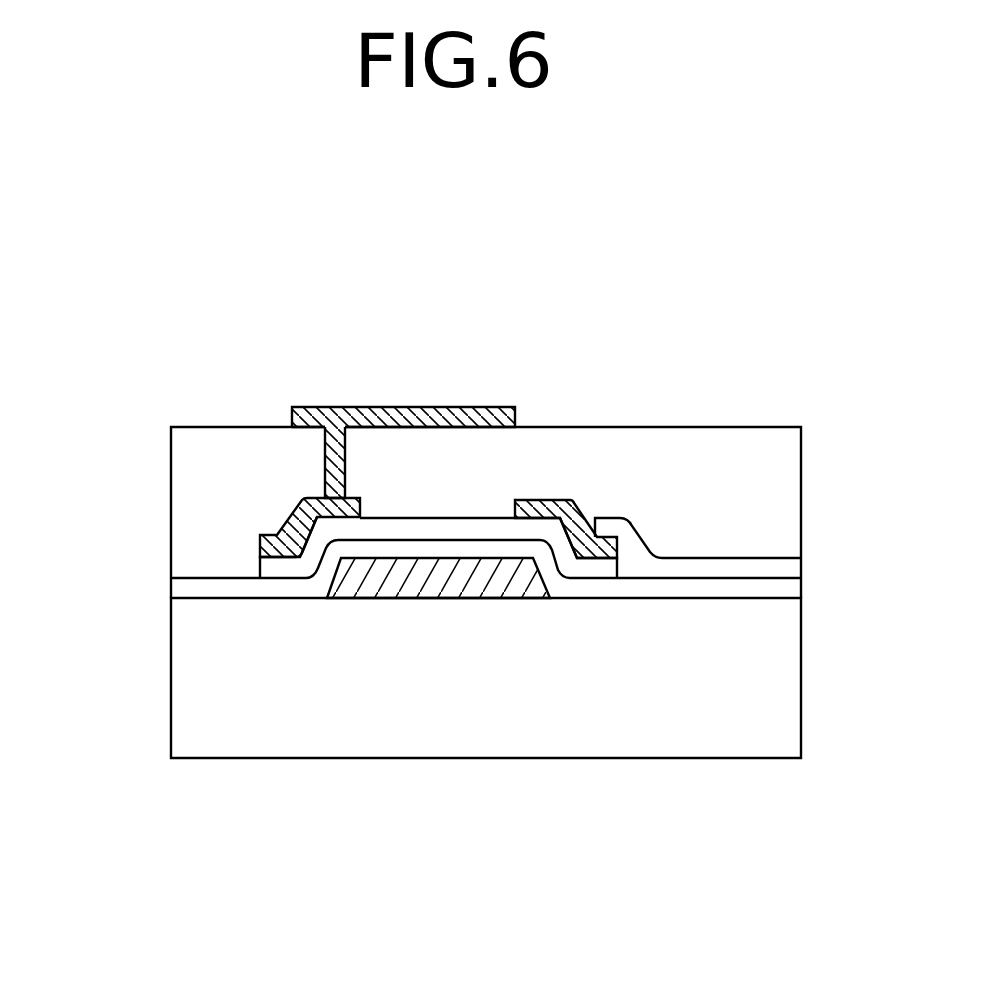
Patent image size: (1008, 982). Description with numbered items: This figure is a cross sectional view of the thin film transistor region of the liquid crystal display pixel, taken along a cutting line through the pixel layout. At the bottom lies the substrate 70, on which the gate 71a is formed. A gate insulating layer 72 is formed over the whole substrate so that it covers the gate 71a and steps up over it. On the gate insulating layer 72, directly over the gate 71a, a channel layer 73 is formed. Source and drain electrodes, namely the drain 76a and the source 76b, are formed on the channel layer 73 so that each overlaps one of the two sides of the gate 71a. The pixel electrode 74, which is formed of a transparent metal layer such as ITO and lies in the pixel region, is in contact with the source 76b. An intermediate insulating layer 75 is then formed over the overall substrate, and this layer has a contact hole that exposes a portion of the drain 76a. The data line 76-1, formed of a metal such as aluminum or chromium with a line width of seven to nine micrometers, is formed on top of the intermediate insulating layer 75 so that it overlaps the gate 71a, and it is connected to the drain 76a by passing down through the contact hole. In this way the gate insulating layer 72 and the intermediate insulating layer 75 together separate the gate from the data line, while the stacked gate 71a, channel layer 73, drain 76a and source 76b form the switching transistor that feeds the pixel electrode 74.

The substrate 70 is at (788, 687).
The gate 71a is at (441, 594).
The gate insulating layer 72 is at (788, 590).
The channel layer 73 is at (282, 573).
The pixel electrode 74 is at (781, 569).
The intermediate insulating layer 75 is at (788, 478).
The data line 76-1 is at (388, 410).
The drain 76a is at (280, 552).
The source 76b is at (541, 504).